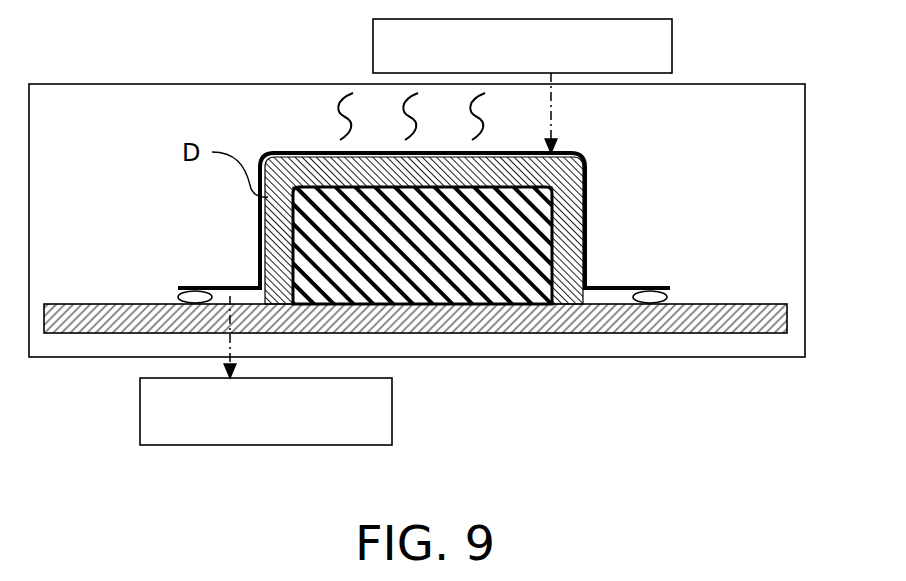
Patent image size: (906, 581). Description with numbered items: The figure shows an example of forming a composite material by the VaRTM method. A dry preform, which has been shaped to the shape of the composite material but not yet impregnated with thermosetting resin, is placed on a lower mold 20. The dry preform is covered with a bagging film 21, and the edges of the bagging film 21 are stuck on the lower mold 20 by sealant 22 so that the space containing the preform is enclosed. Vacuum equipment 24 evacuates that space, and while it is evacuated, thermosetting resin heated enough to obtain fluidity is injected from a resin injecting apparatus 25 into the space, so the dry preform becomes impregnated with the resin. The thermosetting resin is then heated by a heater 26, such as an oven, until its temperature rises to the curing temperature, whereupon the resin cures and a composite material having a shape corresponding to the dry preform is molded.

The lower mold 20 is at (475, 283).
The bagging film 21 is at (590, 176).
The sealant 22 is at (668, 297).
The vacuum equipment 24 is at (140, 403).
The resin injecting apparatus 25 is at (672, 47).
The heater 26 is at (722, 357).